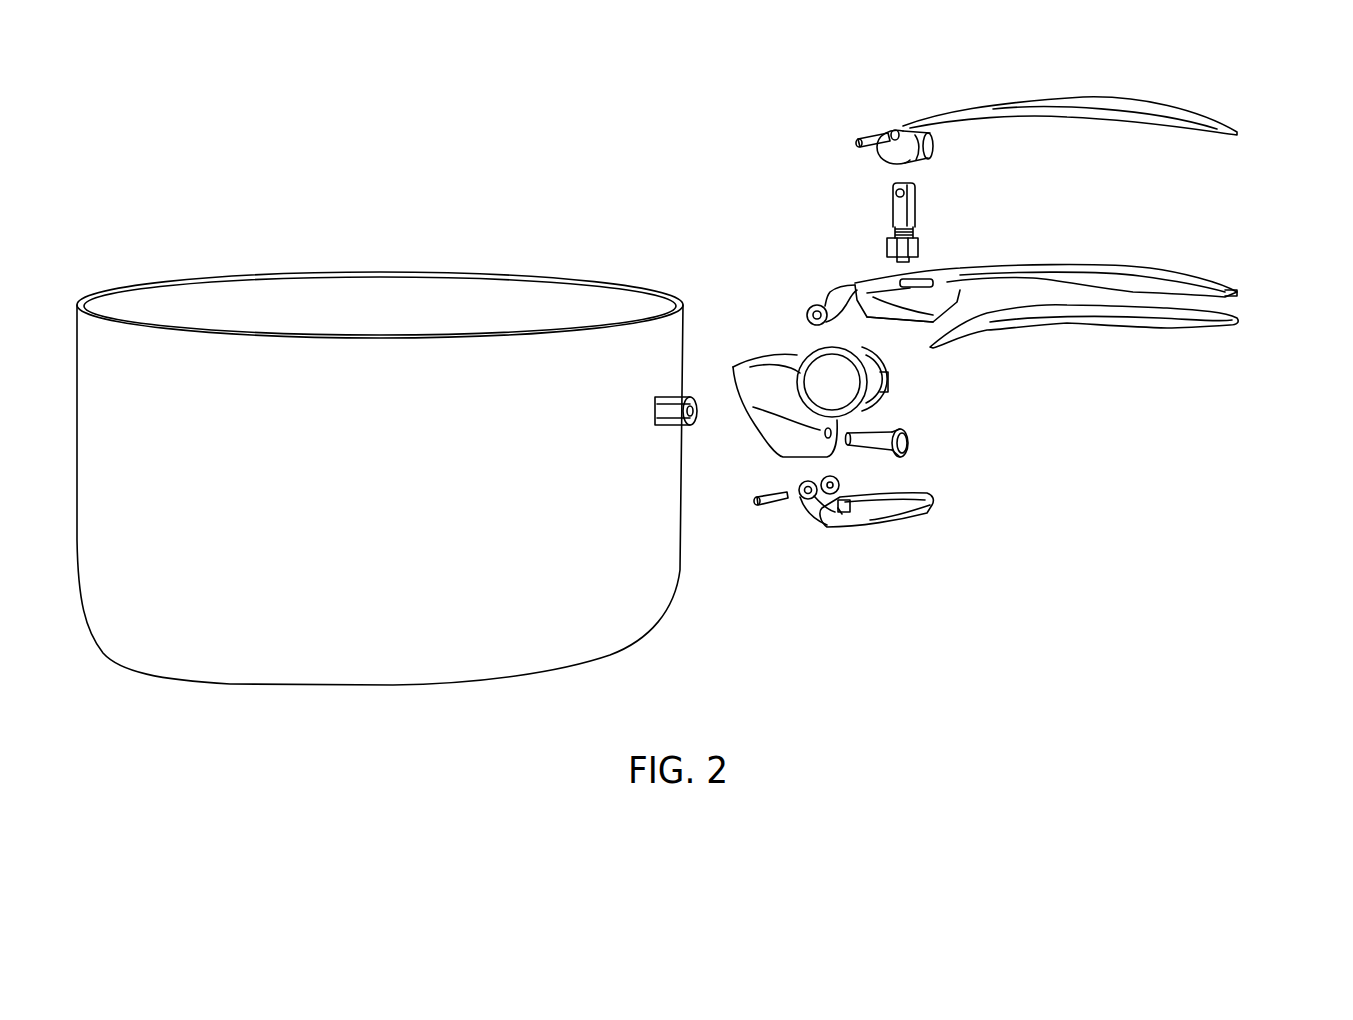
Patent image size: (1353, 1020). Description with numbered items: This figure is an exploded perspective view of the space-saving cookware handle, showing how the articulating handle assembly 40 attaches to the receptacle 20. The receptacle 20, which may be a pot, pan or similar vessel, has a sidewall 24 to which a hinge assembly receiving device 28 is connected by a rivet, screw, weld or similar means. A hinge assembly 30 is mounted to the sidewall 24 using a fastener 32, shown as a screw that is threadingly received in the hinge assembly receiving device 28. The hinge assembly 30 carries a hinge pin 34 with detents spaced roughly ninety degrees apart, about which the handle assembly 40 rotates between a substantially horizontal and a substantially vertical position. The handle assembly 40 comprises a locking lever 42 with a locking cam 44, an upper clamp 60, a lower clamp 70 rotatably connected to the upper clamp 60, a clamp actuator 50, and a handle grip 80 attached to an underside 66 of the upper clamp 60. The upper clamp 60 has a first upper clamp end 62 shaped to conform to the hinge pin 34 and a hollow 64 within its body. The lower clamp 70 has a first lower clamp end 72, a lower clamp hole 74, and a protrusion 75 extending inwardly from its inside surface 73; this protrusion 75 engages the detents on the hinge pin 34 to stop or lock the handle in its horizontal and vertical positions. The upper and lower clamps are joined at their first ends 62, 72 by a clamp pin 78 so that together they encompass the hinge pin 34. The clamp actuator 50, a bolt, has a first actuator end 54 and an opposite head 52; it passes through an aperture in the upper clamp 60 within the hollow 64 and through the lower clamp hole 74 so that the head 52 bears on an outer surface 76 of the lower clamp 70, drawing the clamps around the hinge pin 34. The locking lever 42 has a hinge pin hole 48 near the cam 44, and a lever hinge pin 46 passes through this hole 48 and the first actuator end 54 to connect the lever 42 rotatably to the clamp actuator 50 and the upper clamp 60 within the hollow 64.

The receptacle 20 is at (423, 378).
The sidewall 24 is at (687, 333).
The hinge assembly receiving device 28 is at (673, 437).
The hinge assembly 30 is at (852, 412).
The fastener 32 is at (900, 423).
The hinge pin 34 is at (873, 363).
The handle assembly 40 is at (1018, 97).
The locking lever 42 is at (1148, 99).
The locking cam 44 is at (868, 121).
The lever hinge pin 46 is at (870, 133).
The hinge pin hole 48 is at (893, 128).
The clamp actuator 50 is at (944, 210).
The head 52 is at (918, 245).
The first actuator end 54 is at (910, 185).
The upper clamp 60 is at (1061, 293).
The first upper clamp end 62 is at (812, 304).
The hollow 64 is at (933, 271).
The underside 66 is at (1240, 302).
The lower clamp 70 is at (889, 556).
The first lower clamp end 72 is at (802, 500).
The inside surface 73 is at (840, 500).
The lower clamp hole 74 is at (903, 493).
The protrusion 75 is at (840, 513).
The outer surface 76 is at (883, 527).
The clamp pin 78 is at (772, 507).
The handle grip 80 is at (1098, 324).